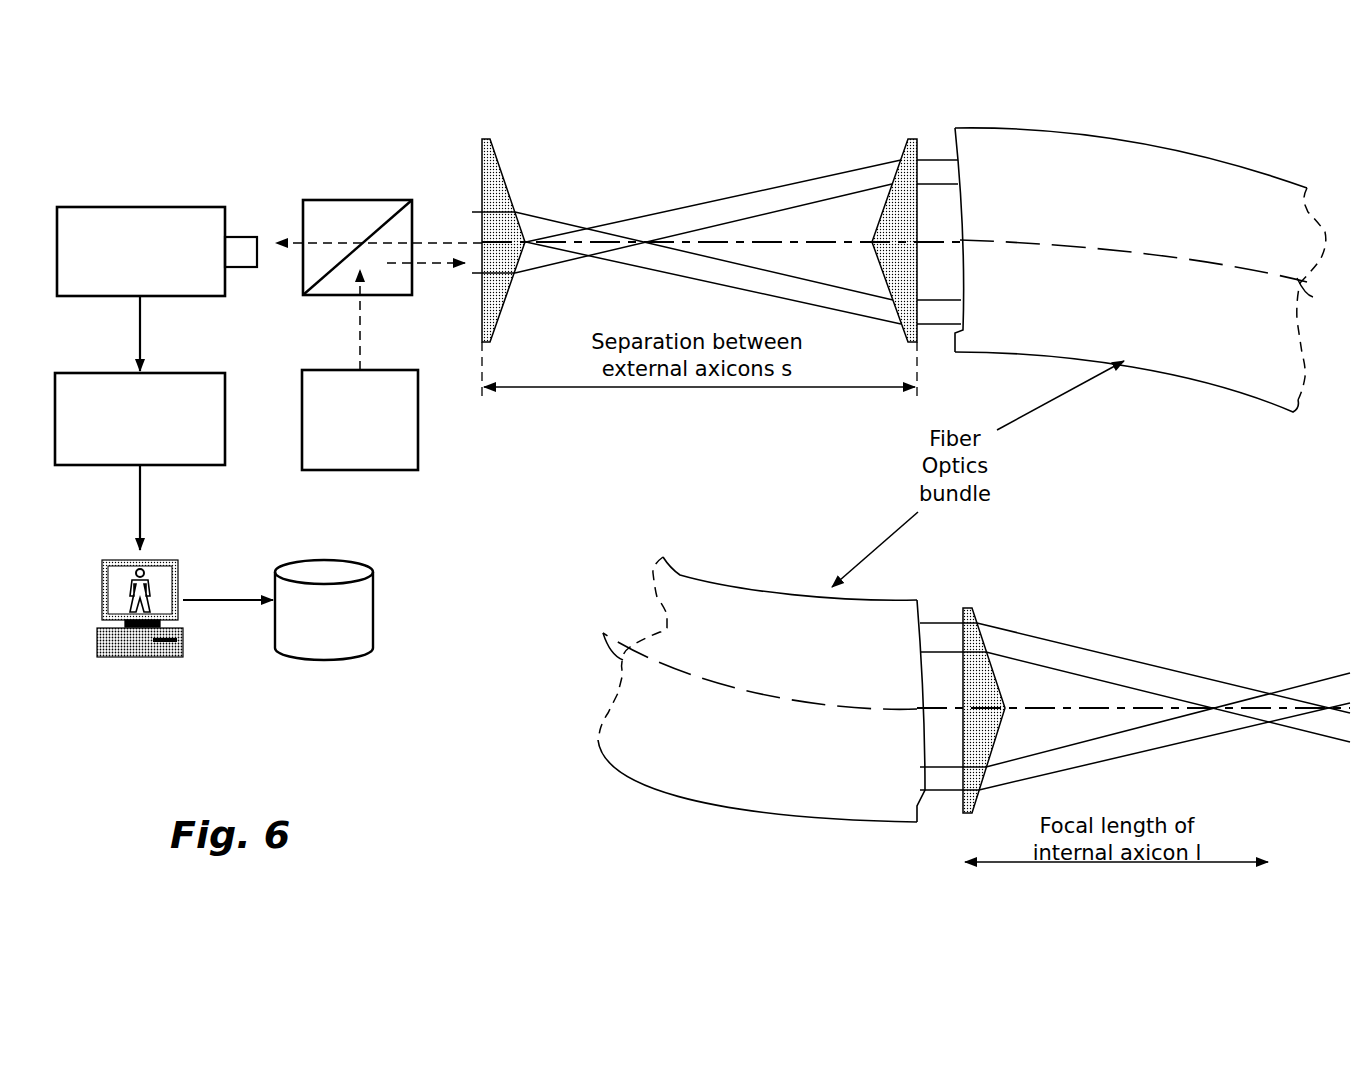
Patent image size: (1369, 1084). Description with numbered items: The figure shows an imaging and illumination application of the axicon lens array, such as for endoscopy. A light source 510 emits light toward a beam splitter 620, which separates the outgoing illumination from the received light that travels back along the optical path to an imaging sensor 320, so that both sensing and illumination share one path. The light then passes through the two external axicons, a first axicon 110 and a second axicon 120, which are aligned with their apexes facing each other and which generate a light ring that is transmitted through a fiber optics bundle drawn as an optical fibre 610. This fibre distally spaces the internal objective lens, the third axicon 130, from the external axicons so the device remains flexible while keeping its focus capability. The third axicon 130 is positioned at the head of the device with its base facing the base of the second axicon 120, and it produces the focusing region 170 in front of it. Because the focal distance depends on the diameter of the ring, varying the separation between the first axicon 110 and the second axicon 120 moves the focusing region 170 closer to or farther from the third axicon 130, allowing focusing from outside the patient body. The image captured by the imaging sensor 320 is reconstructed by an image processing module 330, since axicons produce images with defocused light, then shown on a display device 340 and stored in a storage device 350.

The first axicon 110 is at (506, 160).
The second axicon 120 is at (878, 152).
The third axicon 130 is at (1004, 624).
The focusing region 170 is at (1252, 673).
The imaging sensor 320 is at (158, 206).
The processing module 330 is at (128, 371).
The display device 340 is at (170, 550).
The storage device 350 is at (327, 553).
The light source 510 is at (430, 454).
The optical fibre 610 is at (1256, 148).
The beam splitter 620 is at (353, 190).